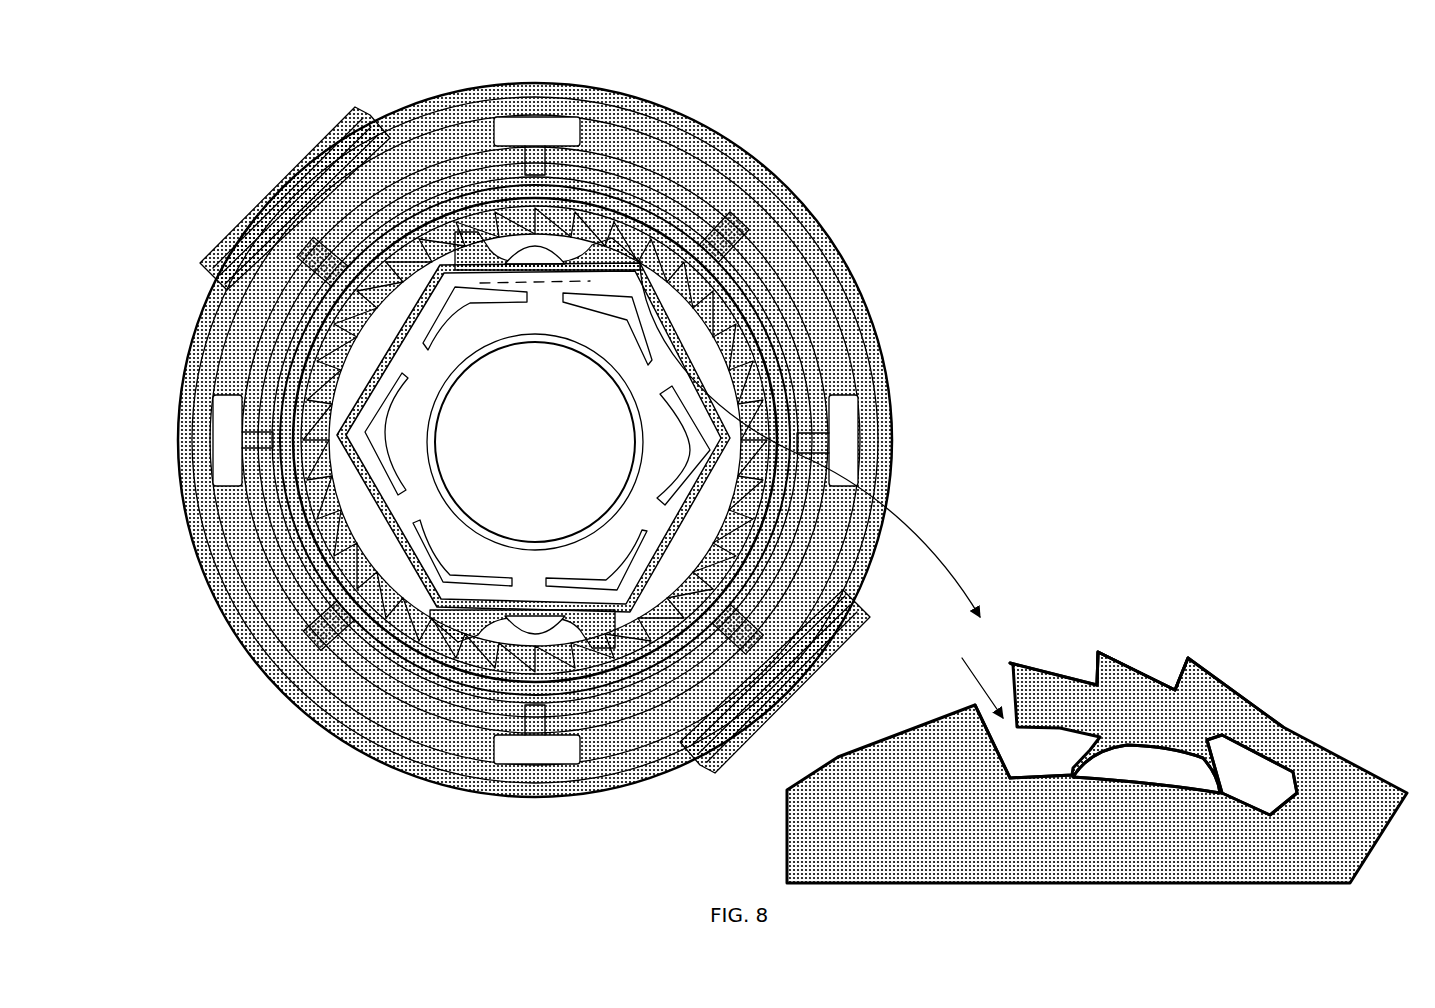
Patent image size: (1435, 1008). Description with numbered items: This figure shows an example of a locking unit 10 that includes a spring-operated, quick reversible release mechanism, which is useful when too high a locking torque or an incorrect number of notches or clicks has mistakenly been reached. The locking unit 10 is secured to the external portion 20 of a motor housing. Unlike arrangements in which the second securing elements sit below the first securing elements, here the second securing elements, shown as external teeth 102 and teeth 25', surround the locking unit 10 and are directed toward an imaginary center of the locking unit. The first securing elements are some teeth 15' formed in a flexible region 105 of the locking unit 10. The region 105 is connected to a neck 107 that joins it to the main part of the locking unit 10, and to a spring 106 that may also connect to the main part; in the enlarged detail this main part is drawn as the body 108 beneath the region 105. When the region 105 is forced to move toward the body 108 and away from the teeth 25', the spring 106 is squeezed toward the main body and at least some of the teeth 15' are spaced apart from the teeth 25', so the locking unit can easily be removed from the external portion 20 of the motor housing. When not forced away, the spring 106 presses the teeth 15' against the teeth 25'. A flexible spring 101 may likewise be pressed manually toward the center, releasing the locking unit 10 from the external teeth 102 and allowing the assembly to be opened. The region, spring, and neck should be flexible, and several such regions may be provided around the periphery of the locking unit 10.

The locking unit 10 is at (790, 186).
The teeth 15' is at (535, 393).
The external portion of motor housing 20 is at (185, 358).
The teeth 25' is at (535, 389).
The flexible spring 101 is at (1218, 770).
The external teeth 102 is at (1175, 680).
The region 105 is at (1146, 689).
The spring 106 is at (1023, 741).
The neck 107 is at (1285, 727).
The ring body 108 is at (1097, 767).